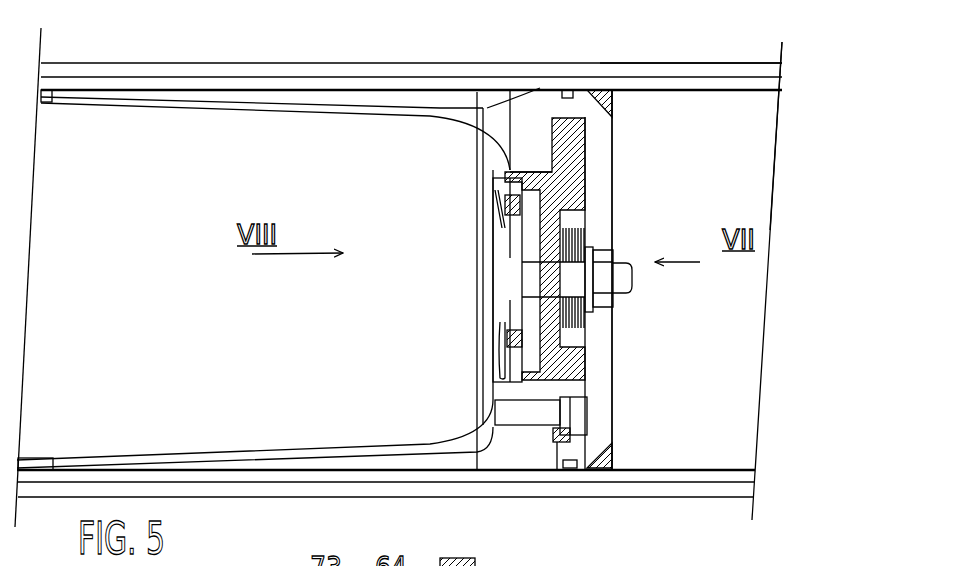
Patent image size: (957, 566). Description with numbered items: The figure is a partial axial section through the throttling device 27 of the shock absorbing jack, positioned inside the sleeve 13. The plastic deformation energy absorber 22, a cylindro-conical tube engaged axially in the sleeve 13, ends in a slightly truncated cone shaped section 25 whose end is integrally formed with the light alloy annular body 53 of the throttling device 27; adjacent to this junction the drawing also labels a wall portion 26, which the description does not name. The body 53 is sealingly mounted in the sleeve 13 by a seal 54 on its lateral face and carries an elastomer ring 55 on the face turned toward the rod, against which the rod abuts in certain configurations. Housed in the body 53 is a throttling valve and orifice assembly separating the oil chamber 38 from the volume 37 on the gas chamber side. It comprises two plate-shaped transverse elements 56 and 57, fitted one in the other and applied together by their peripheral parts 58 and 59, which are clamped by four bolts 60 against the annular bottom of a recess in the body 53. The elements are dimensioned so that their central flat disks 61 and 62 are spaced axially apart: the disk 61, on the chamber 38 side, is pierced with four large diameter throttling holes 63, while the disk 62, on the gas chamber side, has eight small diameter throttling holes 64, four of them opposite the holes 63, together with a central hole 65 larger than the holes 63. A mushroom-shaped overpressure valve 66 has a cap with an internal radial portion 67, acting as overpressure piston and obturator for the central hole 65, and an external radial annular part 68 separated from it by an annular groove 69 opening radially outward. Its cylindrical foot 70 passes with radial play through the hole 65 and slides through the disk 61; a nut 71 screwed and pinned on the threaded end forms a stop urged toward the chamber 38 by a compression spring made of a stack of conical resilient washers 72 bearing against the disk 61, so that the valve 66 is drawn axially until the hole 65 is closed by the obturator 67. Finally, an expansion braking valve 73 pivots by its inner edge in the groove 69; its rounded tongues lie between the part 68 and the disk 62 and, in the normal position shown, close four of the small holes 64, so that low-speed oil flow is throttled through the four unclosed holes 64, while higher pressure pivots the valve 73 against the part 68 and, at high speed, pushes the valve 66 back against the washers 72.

The sleeve 13 is at (733, 62).
The plastic deformation energy absorber 22 is at (198, 113).
The truncated cone shaped section 25 is at (246, 452).
The inner tube end 26 is at (502, 118).
The throttling device 27 is at (632, 127).
The volume 37 is at (485, 167).
The chamber 38 is at (750, 128).
The annular body 53 is at (543, 103).
The seal 54 is at (572, 92).
The elastomer ring 55 is at (607, 467).
The transverse element 56 is at (583, 363).
The transverse element 57 is at (532, 378).
The peripheral part 58 is at (570, 440).
The peripheral part 59 is at (555, 442).
The bolts 60 is at (580, 410).
The disk 61 is at (518, 340).
The disk 62 is at (522, 356).
The large diameter throttling holes 63 is at (580, 197).
The small diameter throttling holes 64 is at (512, 200).
The central hole 65 is at (515, 300).
The overpressure valve 66 is at (490, 282).
The internal radial portion 67 is at (497, 252).
The external radial annular part 68 is at (496, 184).
The annular groove 69 is at (503, 322).
The cylindrical foot 70 is at (547, 286).
The nut 71 is at (597, 307).
The conical resilient washers 72 is at (565, 240).
The expansion braking valve 73 is at (485, 146).